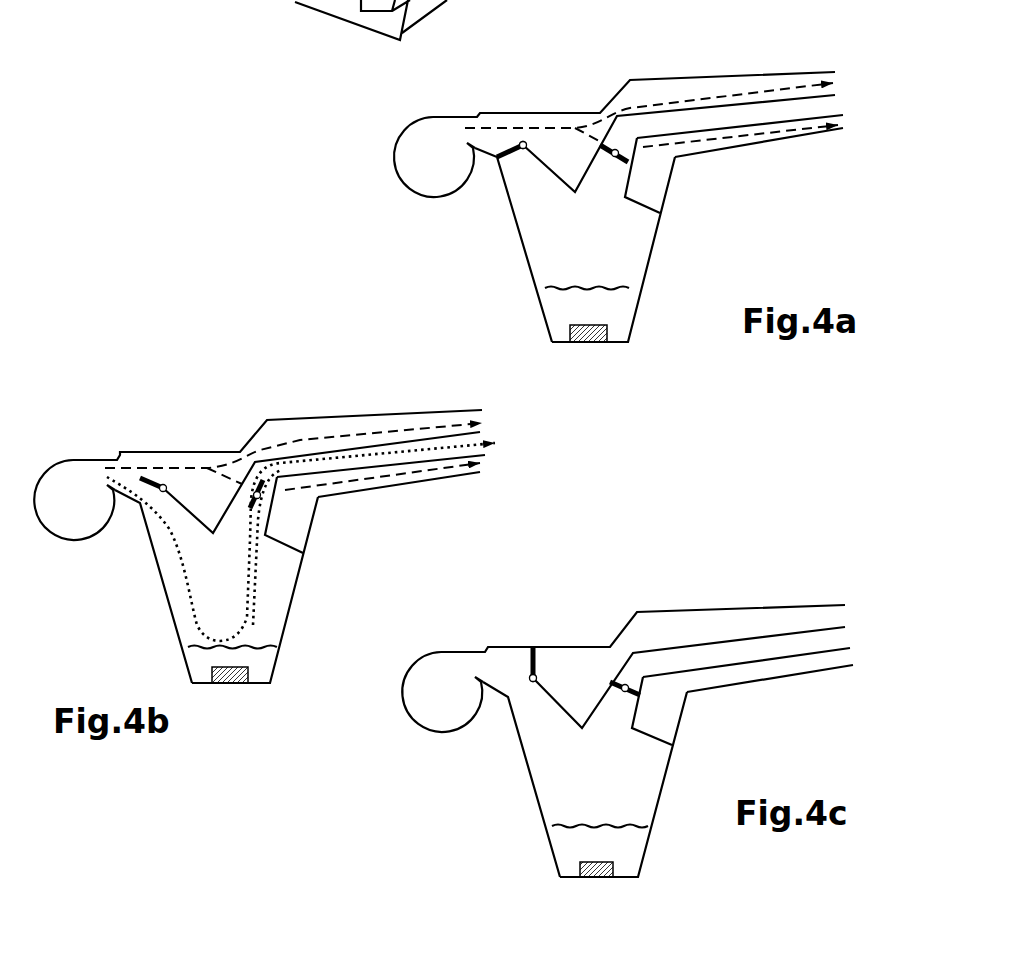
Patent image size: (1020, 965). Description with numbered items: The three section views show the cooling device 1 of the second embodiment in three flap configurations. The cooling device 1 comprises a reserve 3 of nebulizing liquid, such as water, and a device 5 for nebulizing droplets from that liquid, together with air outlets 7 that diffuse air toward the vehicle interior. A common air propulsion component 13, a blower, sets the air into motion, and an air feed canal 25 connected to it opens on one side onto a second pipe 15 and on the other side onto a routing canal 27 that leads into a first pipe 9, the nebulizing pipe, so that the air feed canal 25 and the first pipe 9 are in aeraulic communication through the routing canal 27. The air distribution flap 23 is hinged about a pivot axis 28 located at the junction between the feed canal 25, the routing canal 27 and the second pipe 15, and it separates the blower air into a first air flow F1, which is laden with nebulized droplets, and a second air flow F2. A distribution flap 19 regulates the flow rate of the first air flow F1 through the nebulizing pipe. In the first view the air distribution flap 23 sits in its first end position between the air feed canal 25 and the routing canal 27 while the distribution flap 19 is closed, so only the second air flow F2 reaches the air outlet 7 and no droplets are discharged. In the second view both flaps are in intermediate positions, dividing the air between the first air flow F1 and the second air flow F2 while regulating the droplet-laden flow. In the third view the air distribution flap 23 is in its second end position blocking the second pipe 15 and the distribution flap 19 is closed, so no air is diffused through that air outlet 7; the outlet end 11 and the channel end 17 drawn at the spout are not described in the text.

In FIG. 4A, the cooling device 1 is at (700, 248).
In FIG. 4B, the cooling device 1 is at (340, 584).
In FIG. 4C, the cooling device 1 is at (490, 818).
In FIG. 4A, the reserve of liquid 3 is at (625, 307).
In FIG. 4B, the reserve of liquid 3 is at (267, 662).
In FIG. 4C, the reserve of liquid 3 is at (632, 845).
In FIG. 4A, the device for nebulizing droplets 5 is at (593, 350).
In FIG. 4B, the device for nebulizing droplets 5 is at (225, 690).
In FIG. 4C, the device for nebulizing droplets 5 is at (598, 883).
In FIG. 4A, the air outlet 7 is at (865, 117).
In FIG. 4B, the air outlet 7 is at (518, 458).
In FIG. 4C, the air outlet 7 is at (875, 648).
In FIG. 4A, the first pipe 9 is at (680, 133).
In FIG. 4B, the first pipe 9 is at (227, 507).
In FIG. 4C, the first pipe 9 is at (745, 656).
In FIG. 4A, the outlet opening 11 is at (835, 107).
In FIG. 4B, the outlet opening 11 is at (478, 457).
In FIG. 4C, the outlet opening 11 is at (837, 638).
In FIG. 4A, the common air propulsion component 13 is at (393, 183).
In FIG. 4B, the common air propulsion component 13 is at (80, 540).
In FIG. 4C, the common air propulsion component 13 is at (433, 733).
In FIG. 4A, the second pipe 15 is at (638, 80).
In FIG. 4B, the second pipe 15 is at (313, 420).
In FIG. 4C, the second pipe 15 is at (697, 613).
In FIG. 4A, the second channel 17 is at (843, 128).
In FIG. 4B, the second channel 17 is at (470, 412).
In FIG. 4C, the second channel 17 is at (837, 613).
In FIG. 4A, the distribution flap 19 is at (602, 148).
In FIG. 4B, the distribution flap 19 is at (305, 535).
In FIG. 4C, the distribution flap 19 is at (613, 690).
In FIG. 4A, the air distribution flap 23 is at (505, 160).
In FIG. 4B, the air distribution flap 23 is at (153, 468).
In FIG. 4C, the air distribution flap 23 is at (528, 667).
In FIG. 4A, the air feed canal 25 is at (492, 112).
In FIG. 4B, the air feed canal 25 is at (128, 458).
In FIG. 4C, the air feed canal 25 is at (502, 657).
In FIG. 4A, the routing canal 27 is at (520, 193).
In FIG. 4B, the routing canal 27 is at (148, 508).
In FIG. 4C, the routing canal 27 is at (513, 703).
In FIG. 4A, the pivot axis 28 is at (522, 143).
In FIG. 4C, the pivot axis 28 is at (537, 682).
In FIG. 4B, the first air flow F1 is at (321, 535).
In FIG. 4A, the second air flow F2 is at (790, 82).
In FIG. 4B, the second air flow F2 is at (314, 445).